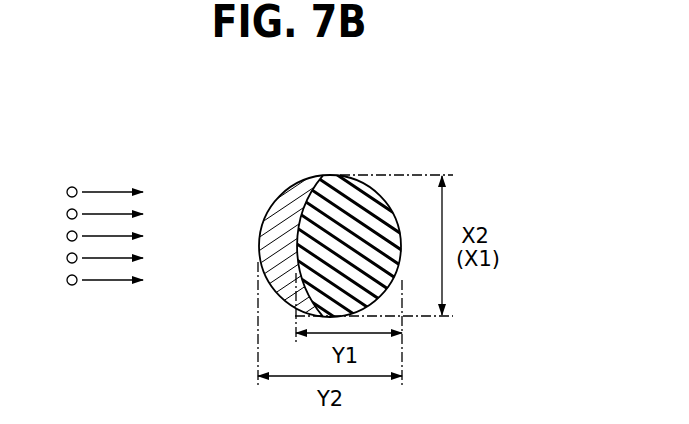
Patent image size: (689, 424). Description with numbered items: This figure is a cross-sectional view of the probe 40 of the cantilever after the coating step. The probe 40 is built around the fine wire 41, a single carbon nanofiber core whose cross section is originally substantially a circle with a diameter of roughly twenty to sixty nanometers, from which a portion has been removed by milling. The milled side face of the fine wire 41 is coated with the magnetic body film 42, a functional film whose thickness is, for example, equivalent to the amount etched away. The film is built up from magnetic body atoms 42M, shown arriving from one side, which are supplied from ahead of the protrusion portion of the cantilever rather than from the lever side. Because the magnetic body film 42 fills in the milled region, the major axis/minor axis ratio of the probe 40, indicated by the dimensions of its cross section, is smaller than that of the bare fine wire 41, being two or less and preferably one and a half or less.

The probe 40 is at (343, 152).
The fine wire 41 is at (388, 204).
The magnetic body film 42 is at (286, 189).
The magnetic body atoms 42M is at (68, 188).